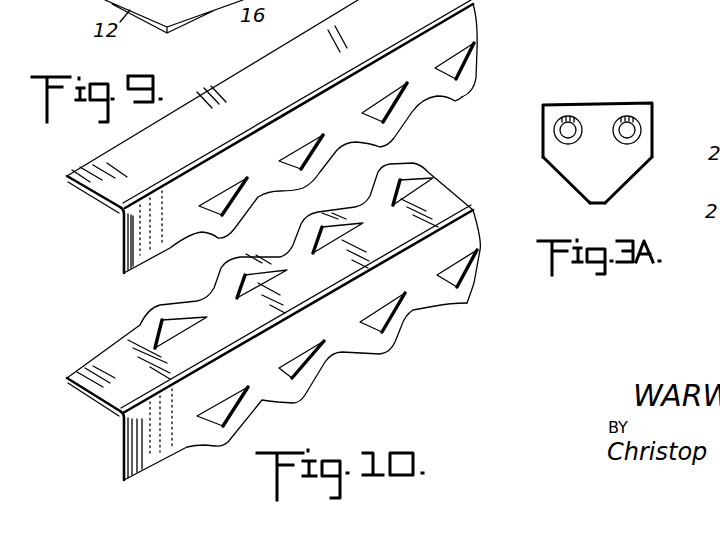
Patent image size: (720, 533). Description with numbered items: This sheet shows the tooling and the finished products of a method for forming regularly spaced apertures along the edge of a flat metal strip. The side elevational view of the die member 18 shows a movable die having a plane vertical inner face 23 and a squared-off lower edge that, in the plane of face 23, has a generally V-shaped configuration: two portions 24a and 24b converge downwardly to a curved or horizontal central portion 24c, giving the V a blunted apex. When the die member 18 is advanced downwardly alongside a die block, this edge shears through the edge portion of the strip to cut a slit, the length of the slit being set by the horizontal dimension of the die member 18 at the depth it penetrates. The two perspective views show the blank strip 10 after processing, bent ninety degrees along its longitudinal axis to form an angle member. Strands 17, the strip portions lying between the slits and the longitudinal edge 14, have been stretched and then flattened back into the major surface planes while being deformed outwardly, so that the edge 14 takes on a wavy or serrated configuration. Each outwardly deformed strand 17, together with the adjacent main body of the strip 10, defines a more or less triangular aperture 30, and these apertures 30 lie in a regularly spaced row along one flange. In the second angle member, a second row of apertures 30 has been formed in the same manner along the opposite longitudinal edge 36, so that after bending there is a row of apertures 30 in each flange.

In FIG. 9, the blank strip 10 is at (168, 166).
In FIG. 10, the blank strip 10 is at (240, 335).
In FIG. 9, the longitudinal edge 14 is at (452, 99).
In FIG. 10, the longitudinal edge 14 is at (443, 308).
In FIG. 9, the strands 17 is at (304, 183).
In FIG. 10, the strands 17 is at (147, 315).
In FIG. 9, the aperture 30 is at (308, 153).
In FIG. 10, the aperture 30 is at (160, 331).
In FIG. 10, the longitudinal edge 36 is at (210, 288).
In FIG. 3A, the die member 18 is at (595, 94).
In FIG. 3A, the inner face 23 is at (570, 155).
In FIG. 3A, the converging edge portion 24a is at (564, 182).
In FIG. 3A, the converging edge portion 24b is at (629, 181).
In FIG. 3A, the central portion 24c is at (596, 205).